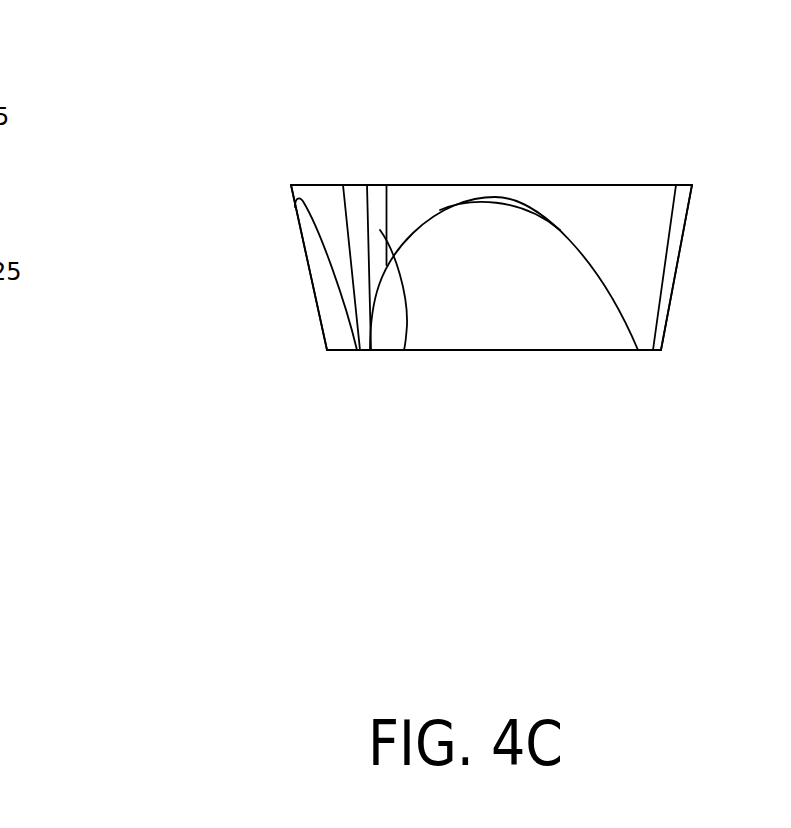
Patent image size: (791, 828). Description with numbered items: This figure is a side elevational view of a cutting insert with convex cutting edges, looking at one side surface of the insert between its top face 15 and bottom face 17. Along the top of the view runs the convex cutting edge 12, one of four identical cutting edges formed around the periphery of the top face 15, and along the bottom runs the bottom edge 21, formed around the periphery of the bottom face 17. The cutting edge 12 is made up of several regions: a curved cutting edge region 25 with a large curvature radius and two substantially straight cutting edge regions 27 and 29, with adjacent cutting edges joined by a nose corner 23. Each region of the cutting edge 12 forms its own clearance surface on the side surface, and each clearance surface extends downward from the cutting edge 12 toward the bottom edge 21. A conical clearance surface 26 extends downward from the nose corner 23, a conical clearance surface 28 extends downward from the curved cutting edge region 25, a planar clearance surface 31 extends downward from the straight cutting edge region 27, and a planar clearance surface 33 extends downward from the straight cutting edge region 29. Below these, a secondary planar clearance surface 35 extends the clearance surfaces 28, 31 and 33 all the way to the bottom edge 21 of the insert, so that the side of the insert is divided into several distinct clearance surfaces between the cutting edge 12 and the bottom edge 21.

The cutting edge 12 is at (517, 185).
The top face 15 is at (655, 170).
The bottom face 17 is at (424, 372).
The bottom edge 21 is at (608, 352).
The nose corner 23 is at (342, 185).
The curved cutting edge region 25 is at (592, 185).
The conical clearance surface 26 is at (364, 258).
The straight cutting edge region 27 is at (378, 185).
The conical clearance surface 28 is at (643, 250).
The straight cutting edge region 29 is at (411, 225).
The planar clearance surface 31 is at (404, 350).
The planar clearance surface 33 is at (400, 200).
The secondary planar clearance surface 35 is at (503, 315).